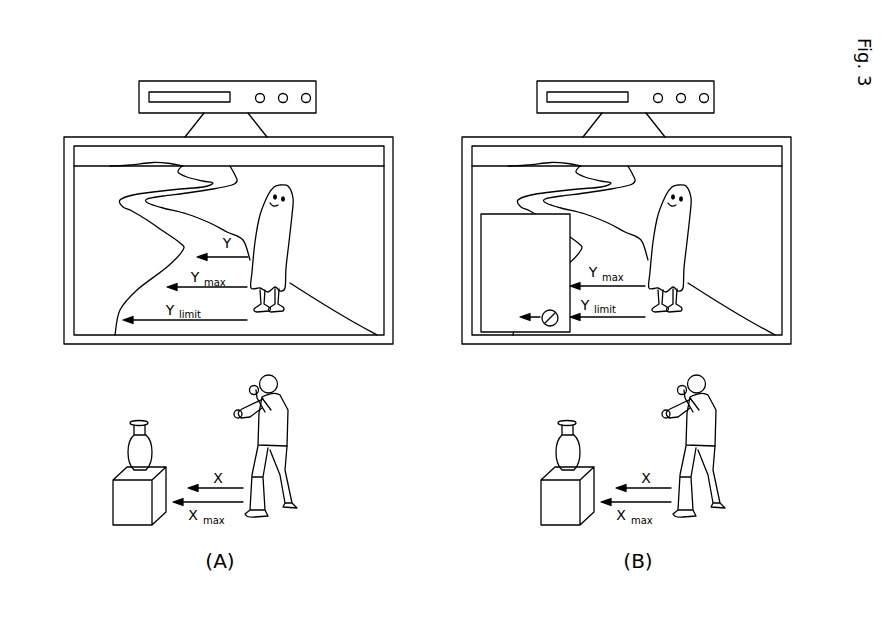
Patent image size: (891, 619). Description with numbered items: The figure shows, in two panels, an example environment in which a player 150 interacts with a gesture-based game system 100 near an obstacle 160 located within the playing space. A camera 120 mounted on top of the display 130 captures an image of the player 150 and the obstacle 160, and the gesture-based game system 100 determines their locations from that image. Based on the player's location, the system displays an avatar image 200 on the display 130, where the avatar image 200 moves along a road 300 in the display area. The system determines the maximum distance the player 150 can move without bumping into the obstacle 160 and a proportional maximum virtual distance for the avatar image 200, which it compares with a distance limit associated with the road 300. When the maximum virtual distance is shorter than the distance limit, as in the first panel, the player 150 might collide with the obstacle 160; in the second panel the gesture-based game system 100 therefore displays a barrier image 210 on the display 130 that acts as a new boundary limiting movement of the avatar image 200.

The gesture-based game system 100 is at (77, 130).
The camera 120 is at (243, 93).
The display 130 is at (68, 253).
The player 150 is at (278, 438).
The obstacle 160 is at (117, 492).
The avatar image 200 is at (287, 186).
The barrier image 210 is at (503, 308).
The road 300 is at (137, 208).